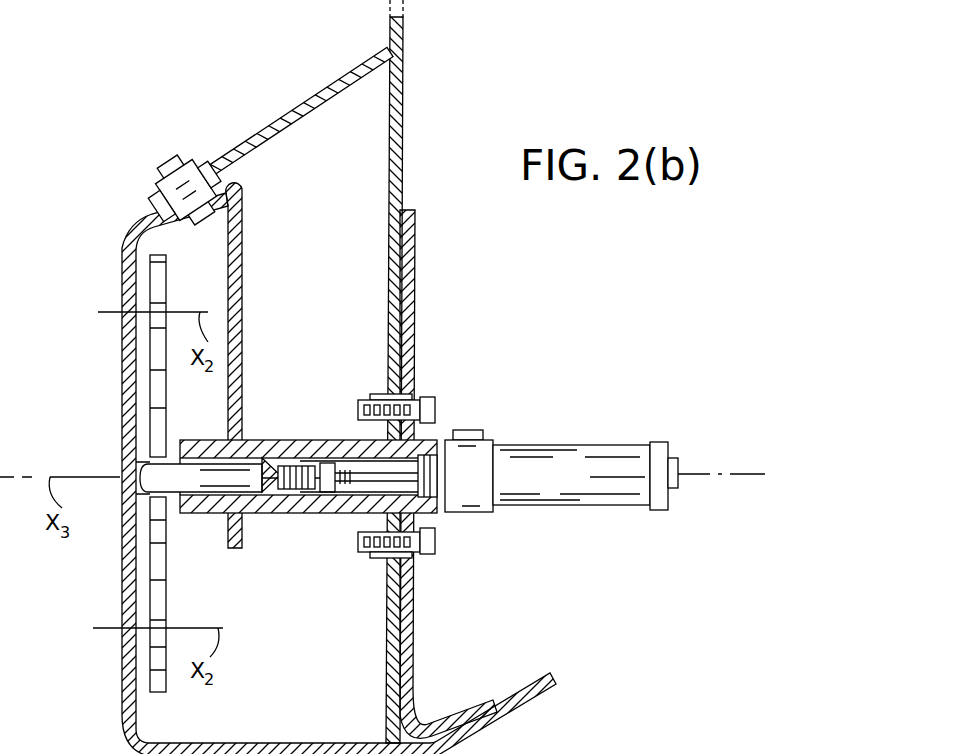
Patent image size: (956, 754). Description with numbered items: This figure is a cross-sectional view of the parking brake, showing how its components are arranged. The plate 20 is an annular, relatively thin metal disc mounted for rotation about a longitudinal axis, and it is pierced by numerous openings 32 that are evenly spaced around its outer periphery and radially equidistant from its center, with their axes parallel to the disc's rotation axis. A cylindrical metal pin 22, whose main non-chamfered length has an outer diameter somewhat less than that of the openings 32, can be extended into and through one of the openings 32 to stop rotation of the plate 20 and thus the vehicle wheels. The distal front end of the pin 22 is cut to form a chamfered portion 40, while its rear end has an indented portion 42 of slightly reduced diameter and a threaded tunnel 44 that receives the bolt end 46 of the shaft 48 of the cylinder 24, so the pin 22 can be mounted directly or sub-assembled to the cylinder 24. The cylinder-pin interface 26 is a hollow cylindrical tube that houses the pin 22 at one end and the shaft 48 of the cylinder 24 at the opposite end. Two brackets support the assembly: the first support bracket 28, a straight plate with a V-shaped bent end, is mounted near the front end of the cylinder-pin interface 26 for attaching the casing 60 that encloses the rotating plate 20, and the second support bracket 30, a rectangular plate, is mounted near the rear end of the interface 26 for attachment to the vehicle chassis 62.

The plate 20 is at (163, 520).
The pin 22 is at (137, 507).
The cylinder 24 is at (561, 463).
The cylinder-pin interface 26 is at (279, 441).
The first support bracket 28 is at (245, 266).
The second support bracket 30 is at (378, 400).
The openings 32 is at (170, 456).
The chamfered portion 40 is at (144, 468).
The indented portion 42 is at (322, 508).
The threaded tunnel 44 is at (293, 496).
The bolt end 46 is at (288, 443).
The shaft 48 is at (410, 470).
The casing 60 is at (123, 675).
The chassis 62 is at (404, 173).